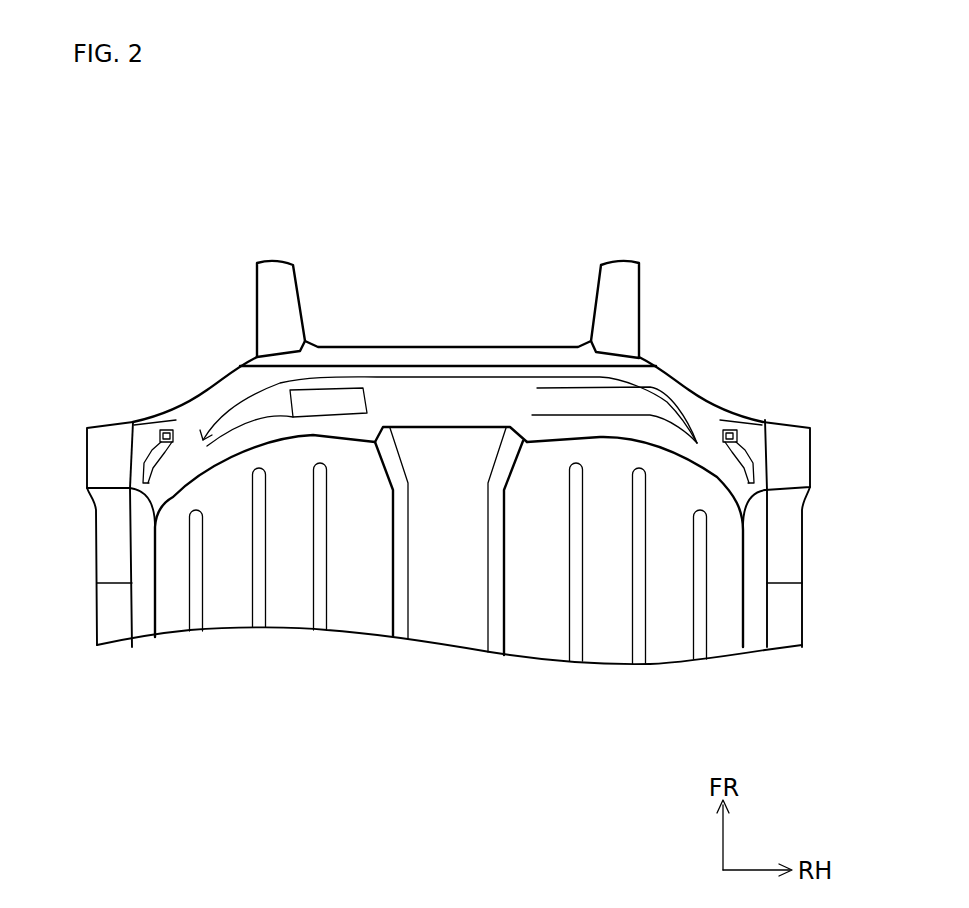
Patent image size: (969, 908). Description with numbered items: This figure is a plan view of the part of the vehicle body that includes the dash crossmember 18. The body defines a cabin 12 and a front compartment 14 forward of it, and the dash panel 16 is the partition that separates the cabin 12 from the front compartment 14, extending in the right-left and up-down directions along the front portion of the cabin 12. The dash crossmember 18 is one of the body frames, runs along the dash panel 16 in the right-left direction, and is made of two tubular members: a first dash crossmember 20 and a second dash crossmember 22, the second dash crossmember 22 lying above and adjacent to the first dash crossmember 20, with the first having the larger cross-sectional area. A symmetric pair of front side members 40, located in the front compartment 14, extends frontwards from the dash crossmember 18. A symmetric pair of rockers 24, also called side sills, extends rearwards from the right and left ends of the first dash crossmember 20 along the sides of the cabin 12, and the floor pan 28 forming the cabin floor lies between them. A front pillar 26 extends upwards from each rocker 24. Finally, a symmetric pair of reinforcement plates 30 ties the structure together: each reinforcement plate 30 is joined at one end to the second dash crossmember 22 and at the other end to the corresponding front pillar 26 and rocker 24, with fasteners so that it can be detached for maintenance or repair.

The cabin 12 is at (660, 483).
The front compartment 14 is at (357, 238).
The dash panel 16 is at (660, 377).
The dash crossmember 18 is at (478, 237).
The first dash crossmember 20 is at (598, 438).
The second dash crossmember 22 is at (532, 379).
The rocker 24 is at (107, 612).
The front pillar 26 is at (97, 458).
The floor pan 28 is at (230, 490).
The reinforcement plate 30 is at (152, 433).
The front side member 40 is at (275, 288).